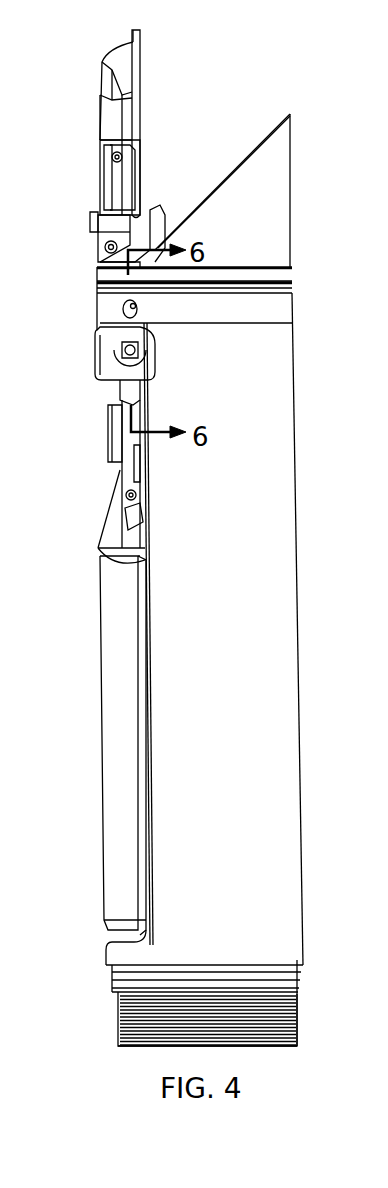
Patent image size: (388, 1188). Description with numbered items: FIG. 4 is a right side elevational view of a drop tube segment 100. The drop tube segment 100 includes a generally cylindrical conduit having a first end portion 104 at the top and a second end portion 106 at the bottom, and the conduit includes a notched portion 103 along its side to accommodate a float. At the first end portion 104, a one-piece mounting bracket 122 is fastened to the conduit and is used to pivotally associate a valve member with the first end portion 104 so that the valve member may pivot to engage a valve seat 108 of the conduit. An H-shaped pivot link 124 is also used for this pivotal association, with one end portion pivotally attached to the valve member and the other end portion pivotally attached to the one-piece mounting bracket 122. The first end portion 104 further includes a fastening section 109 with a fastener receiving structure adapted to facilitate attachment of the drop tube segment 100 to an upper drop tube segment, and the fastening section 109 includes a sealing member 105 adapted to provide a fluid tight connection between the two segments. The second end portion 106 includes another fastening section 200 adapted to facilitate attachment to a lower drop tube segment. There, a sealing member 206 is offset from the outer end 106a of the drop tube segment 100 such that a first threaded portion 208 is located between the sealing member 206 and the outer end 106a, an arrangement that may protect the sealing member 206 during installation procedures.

The drop tube segment 100 is at (332, 606).
The notched portion 103 is at (146, 762).
The first end portion 104 is at (305, 114).
The sealing member 105 is at (97, 289).
The second end portion 106 is at (100, 942).
The outer end 106a is at (292, 1042).
The valve seat 108 is at (245, 157).
The fastening section 109 is at (84, 322).
The one-piece mounting bracket 122 is at (100, 263).
The H-shaped pivot link 124 is at (102, 219).
The fastening section 200 is at (313, 988).
The sealing member 206 is at (112, 980).
The first threaded portion 208 is at (300, 1010).